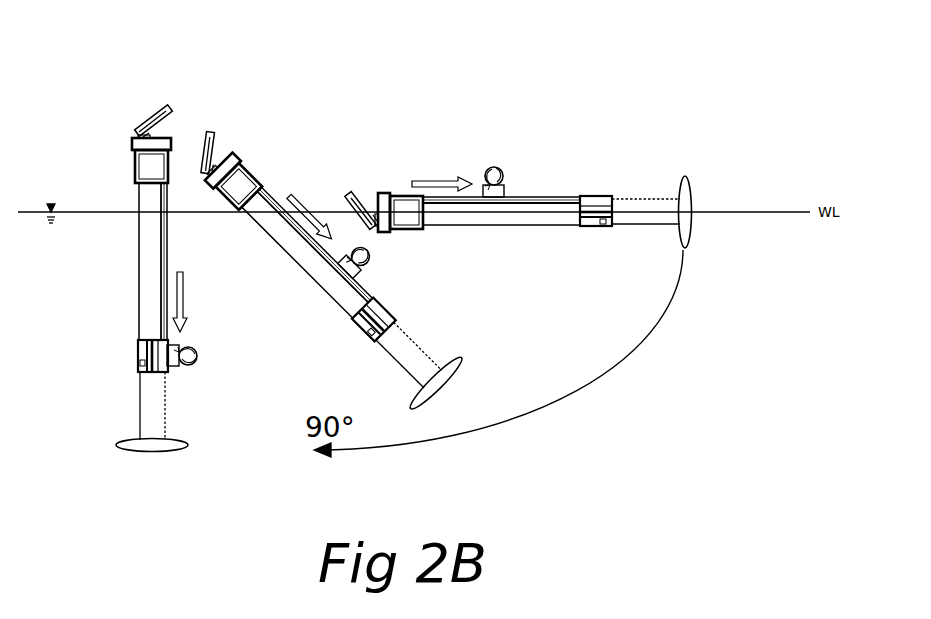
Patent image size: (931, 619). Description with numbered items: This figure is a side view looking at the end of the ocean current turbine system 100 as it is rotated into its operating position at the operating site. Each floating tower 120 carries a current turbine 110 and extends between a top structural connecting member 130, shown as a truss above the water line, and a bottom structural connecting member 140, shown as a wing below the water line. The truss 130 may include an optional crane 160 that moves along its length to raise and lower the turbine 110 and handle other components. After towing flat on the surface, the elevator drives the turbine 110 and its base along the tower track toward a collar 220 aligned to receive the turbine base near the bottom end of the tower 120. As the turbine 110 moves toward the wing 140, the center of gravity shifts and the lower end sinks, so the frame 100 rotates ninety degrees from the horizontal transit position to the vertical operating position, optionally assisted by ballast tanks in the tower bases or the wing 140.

The ocean current turbine system 100 is at (172, 105).
The current turbine 110 is at (190, 360).
The floating tower 120 is at (139, 405).
The top structural connecting member 130 is at (128, 158).
The bottom structural connecting member 140 is at (166, 450).
The crane 160 is at (222, 134).
The collar 220 is at (138, 345).